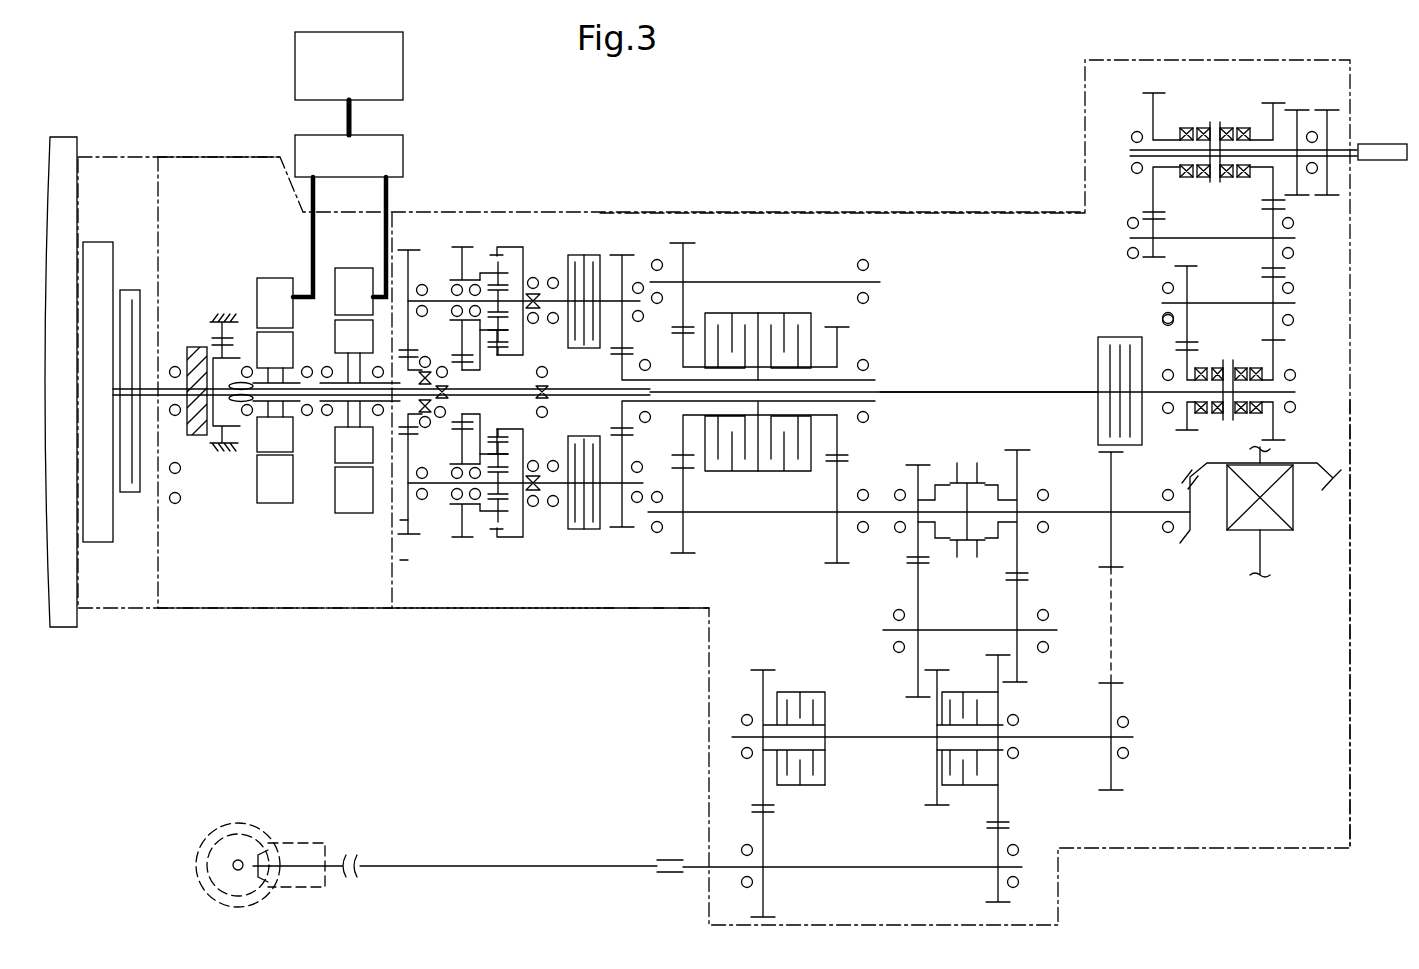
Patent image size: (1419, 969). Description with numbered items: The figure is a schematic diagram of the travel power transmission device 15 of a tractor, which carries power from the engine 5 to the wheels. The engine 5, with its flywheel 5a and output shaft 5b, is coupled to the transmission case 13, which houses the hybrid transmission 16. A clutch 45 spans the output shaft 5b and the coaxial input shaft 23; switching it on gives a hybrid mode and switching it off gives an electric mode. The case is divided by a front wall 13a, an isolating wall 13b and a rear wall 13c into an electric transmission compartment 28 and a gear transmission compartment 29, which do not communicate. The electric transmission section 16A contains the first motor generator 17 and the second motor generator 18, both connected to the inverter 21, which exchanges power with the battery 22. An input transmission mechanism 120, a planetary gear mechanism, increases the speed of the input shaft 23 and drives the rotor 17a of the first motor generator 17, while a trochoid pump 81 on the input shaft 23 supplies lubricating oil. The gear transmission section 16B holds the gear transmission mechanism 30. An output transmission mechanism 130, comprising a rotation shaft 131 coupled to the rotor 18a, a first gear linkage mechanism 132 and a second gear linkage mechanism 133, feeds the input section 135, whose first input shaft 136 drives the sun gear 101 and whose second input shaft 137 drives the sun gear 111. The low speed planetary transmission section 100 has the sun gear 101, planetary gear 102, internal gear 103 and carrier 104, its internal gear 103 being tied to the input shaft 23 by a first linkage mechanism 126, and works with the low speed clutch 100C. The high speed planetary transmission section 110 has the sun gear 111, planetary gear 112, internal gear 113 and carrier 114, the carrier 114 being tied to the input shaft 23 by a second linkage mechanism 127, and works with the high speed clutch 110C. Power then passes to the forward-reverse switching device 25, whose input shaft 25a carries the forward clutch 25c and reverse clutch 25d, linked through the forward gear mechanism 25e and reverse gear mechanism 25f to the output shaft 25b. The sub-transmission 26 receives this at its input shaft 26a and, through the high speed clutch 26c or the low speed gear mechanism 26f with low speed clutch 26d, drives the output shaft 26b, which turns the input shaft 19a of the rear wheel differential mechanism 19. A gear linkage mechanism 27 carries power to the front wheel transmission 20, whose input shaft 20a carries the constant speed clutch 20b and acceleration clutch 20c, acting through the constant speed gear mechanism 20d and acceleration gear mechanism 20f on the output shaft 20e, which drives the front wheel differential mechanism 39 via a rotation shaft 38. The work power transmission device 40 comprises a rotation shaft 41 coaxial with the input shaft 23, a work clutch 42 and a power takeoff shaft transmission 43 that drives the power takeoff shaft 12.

The engine 5 is at (75, 185).
The flywheel 5a is at (113, 265).
The output shaft 5b is at (122, 395).
The clutch 45 is at (130, 500).
The power takeoff shaft 12 is at (1388, 162).
The transmission case 13 is at (883, 212).
The front wall 13a is at (155, 572).
The isolating wall 13b is at (390, 593).
The rear wall 13c is at (1350, 428).
The travel power transmission device 15 is at (785, 138).
The hybrid transmission 16 is at (525, 588).
The electric transmission section 16A is at (252, 597).
The gear transmission section 16B is at (674, 582).
The first motor generator 17 is at (291, 278).
The rotor 17a is at (288, 445).
The second motor generator 18 is at (371, 267).
The rotor 18a is at (337, 325).
The rear wheel differential mechanism 19 is at (1238, 538).
The input shaft 19a is at (1135, 515).
The front wheel transmission 20 is at (908, 759).
The input shaft 20a is at (870, 735).
The constant speed clutch 20b is at (790, 785).
The acceleration clutch 20c is at (967, 785).
The constant speed gear mechanism 20d is at (760, 697).
The output shaft 20e is at (900, 868).
The acceleration gear mechanism 20f is at (1000, 808).
The inverter 21 is at (348, 216).
The battery 22 is at (349, 83).
The input shaft 23 is at (355, 390).
The forward-reverse switching device 25 is at (919, 377).
The input shaft 25a is at (845, 380).
The output shaft 25b is at (713, 512).
The forward clutch 25c is at (802, 310).
The reverse clutch 25d is at (742, 310).
The forward gear mechanism 25e is at (833, 535).
The reverse gear mechanism 25f is at (685, 258).
The sub-transmission 26 is at (984, 516).
The input shaft 26a is at (890, 522).
The output shaft 26b is at (1085, 508).
The high speed clutch 26c is at (945, 480).
The low speed clutch 26d is at (993, 480).
The low speed gear mechanism 26f is at (1043, 583).
The gear linkage mechanism 27 is at (1137, 702).
The electric transmission compartment 28 is at (178, 205).
The gear transmission compartment 29 is at (1014, 263).
The gear transmission mechanism 30 is at (634, 222).
The rotation shaft 38 is at (530, 862).
The front wheel differential mechanism 39 is at (238, 822).
The work power transmission device 40 is at (1027, 339).
The rotation shaft 41 is at (1060, 388).
The work clutch 42 is at (1118, 335).
The power takeoff shaft transmission 43 is at (1116, 175).
The trochoid pump 81 is at (200, 347).
The low speed planetary transmission section 100 is at (519, 526).
The low speed clutch 100C is at (590, 530).
The sun gear 101 is at (535, 462).
The planetary gear 102 is at (507, 515).
The internal gear 103 is at (508, 533).
The carrier 104 is at (507, 455).
The high speed planetary transmission section 110 is at (519, 264).
The high speed clutch 110C is at (595, 252).
The sun gear 111 is at (530, 284).
The planetary gear 112 is at (498, 335).
The internal gear 113 is at (503, 252).
The carrier 114 is at (486, 245).
The input transmission mechanism 120 is at (226, 306).
The first linkage mechanism 126 is at (460, 540).
The second linkage mechanism 127 is at (487, 277).
The output transmission mechanism 130 is at (414, 241).
The rotation shaft 131 is at (420, 414).
The first gear linkage mechanism 132 is at (408, 520).
The second gear linkage mechanism 133 is at (410, 280).
The input section 135 is at (408, 560).
The first input shaft 136 is at (447, 486).
The second input shaft 137 is at (447, 303).